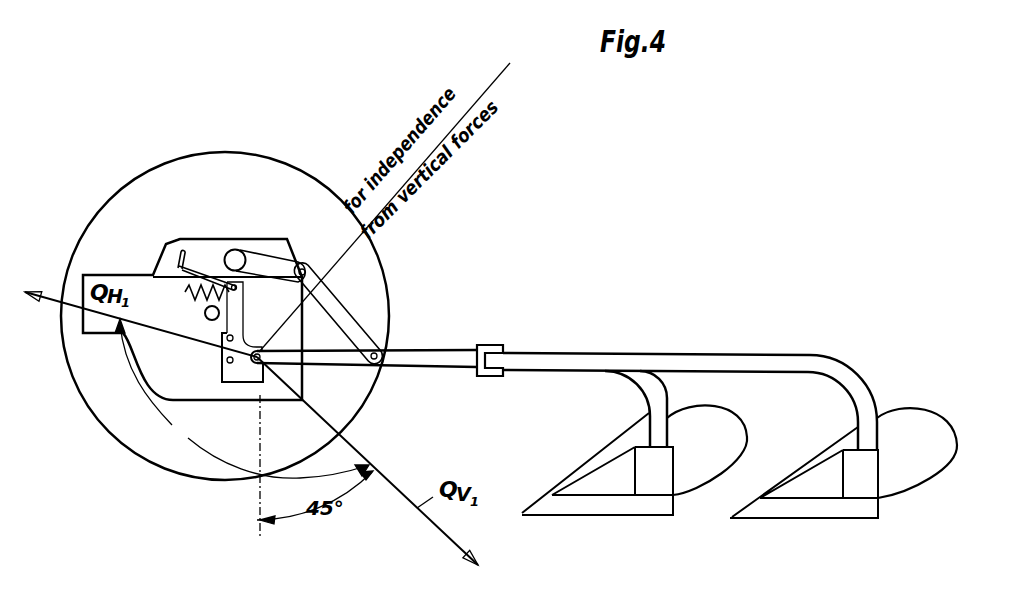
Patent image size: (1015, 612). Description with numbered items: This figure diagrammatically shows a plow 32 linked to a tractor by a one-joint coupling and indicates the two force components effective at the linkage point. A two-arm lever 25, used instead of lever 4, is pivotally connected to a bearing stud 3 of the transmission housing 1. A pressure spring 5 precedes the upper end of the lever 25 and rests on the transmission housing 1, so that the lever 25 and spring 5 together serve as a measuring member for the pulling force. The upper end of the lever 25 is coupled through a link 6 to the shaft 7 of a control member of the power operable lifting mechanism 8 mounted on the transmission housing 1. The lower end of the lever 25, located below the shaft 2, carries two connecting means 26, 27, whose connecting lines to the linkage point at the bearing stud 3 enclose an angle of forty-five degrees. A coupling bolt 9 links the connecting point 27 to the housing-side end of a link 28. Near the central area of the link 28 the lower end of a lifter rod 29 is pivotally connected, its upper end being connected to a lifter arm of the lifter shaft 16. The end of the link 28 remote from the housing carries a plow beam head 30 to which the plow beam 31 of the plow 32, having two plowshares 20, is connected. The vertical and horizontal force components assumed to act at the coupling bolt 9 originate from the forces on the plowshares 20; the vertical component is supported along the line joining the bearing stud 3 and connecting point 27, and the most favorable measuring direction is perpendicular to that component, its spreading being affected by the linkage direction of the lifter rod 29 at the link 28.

The transmission housing 1 is at (90, 328).
The shaft 2 is at (207, 320).
The bearing stud 3 is at (227, 342).
The lever 4 is at (279, 263).
The pressure spring 5 is at (184, 293).
The link 6 is at (197, 264).
The shaft 7 is at (184, 247).
The power operable lifting mechanism 8 is at (235, 240).
The lifter shaft 16 is at (244, 260).
The coupling bolt 9 is at (289, 399).
The connecting means 27 is at (259, 370).
The two-arm lever 25 is at (238, 375).
The connecting means 26 is at (231, 364).
The link 28 is at (438, 358).
The lifter rod 29 is at (344, 320).
The plow beam head 30 is at (503, 347).
The plow beam 31 is at (587, 358).
The plow 32 is at (660, 397).
The plowshares 20 is at (940, 433).